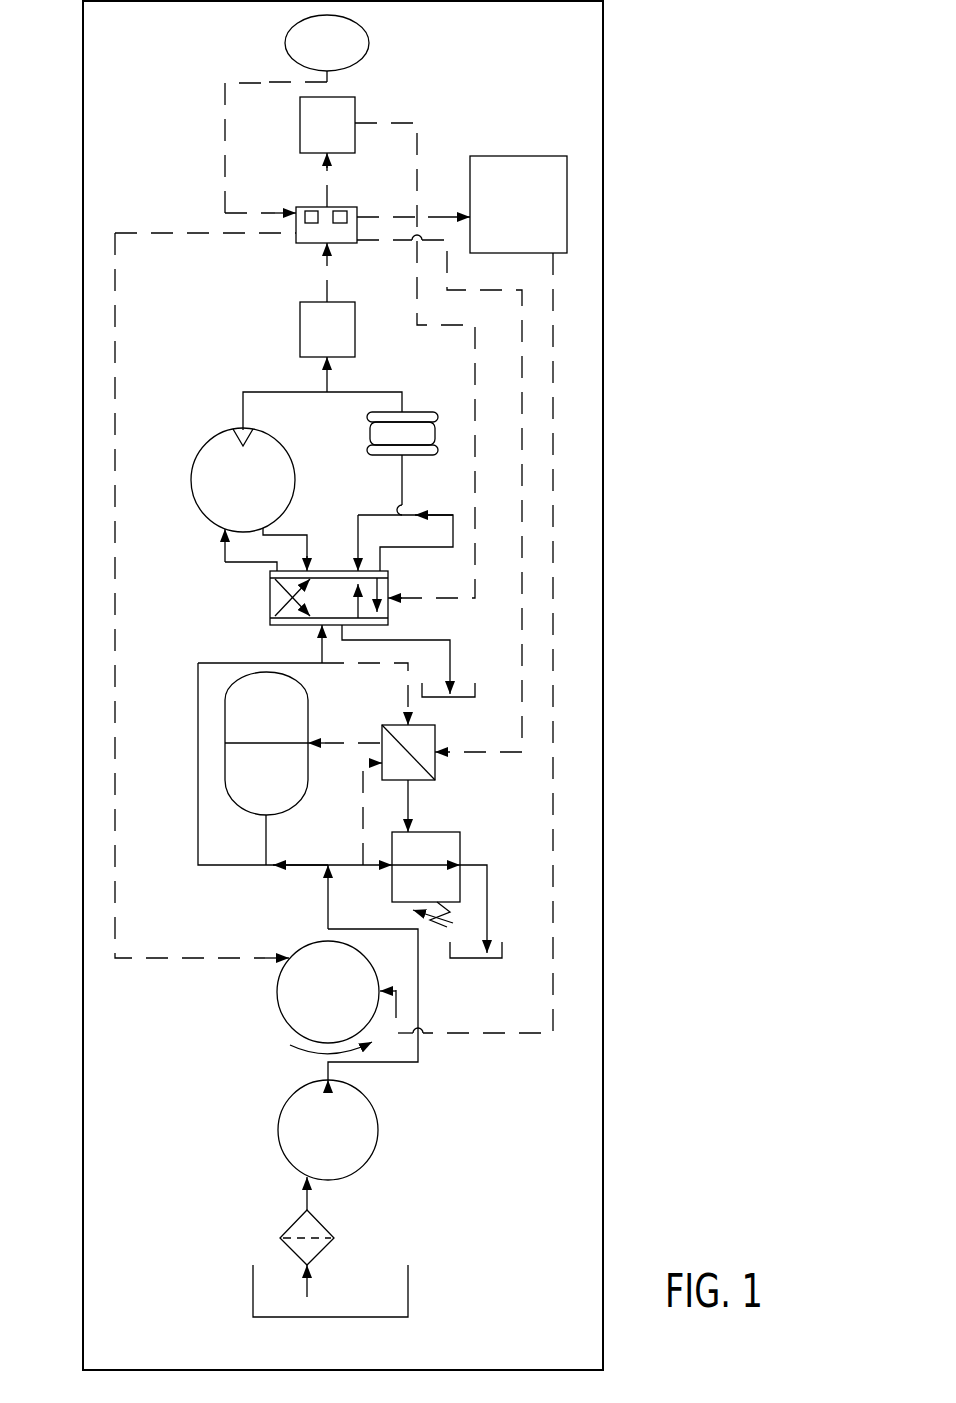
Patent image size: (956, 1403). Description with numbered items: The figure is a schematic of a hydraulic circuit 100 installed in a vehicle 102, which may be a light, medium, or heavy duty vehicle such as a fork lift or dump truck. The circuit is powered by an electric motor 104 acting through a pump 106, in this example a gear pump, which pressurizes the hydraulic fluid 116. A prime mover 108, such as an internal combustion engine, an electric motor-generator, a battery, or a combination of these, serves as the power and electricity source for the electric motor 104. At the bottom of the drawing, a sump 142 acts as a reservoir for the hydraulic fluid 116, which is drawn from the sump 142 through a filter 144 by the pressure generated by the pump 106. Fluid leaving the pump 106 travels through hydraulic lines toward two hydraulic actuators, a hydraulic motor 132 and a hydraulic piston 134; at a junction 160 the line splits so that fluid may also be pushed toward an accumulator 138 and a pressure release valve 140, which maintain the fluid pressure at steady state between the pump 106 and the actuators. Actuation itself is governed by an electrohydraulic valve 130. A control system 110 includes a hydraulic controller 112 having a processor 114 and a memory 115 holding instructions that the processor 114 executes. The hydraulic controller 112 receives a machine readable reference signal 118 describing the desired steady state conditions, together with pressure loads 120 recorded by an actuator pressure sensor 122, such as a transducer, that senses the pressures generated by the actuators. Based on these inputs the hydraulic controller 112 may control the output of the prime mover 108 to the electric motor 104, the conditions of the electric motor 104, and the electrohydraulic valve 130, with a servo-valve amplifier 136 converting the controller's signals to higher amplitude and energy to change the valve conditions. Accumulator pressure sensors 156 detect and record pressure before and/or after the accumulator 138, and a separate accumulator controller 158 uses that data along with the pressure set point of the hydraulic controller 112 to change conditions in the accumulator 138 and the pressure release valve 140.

The hydraulic circuit 100 is at (663, 117).
The vehicle 102 is at (604, 545).
The electric motor 104 is at (277, 998).
The pump 106 is at (293, 1092).
The prime mover 108 is at (482, 594).
The control system 110 is at (281, 124).
The hydraulic controller 112 is at (395, 457).
The processor 114 is at (304, 210).
The memory 115 is at (347, 209).
The hydraulic fluid 116 is at (308, 1292).
The reference signal 118 is at (366, 33).
The pressure loads 120 is at (330, 380).
The actuator pressure sensor 122 is at (300, 325).
The electrohydraulic valve 130 is at (270, 598).
The hydraulic motor 132 is at (192, 490).
The hydraulic piston 134 is at (367, 450).
The servo-valve amplifier 136 is at (356, 122).
The accumulator 138 is at (309, 718).
The pressure release valve 140 is at (428, 832).
The sump 142 is at (476, 694).
The filter 144 is at (281, 1237).
The accumulator pressure sensors 156 is at (422, 764).
The accumulator controller 158 is at (412, 770).
The junction 160 is at (325, 878).